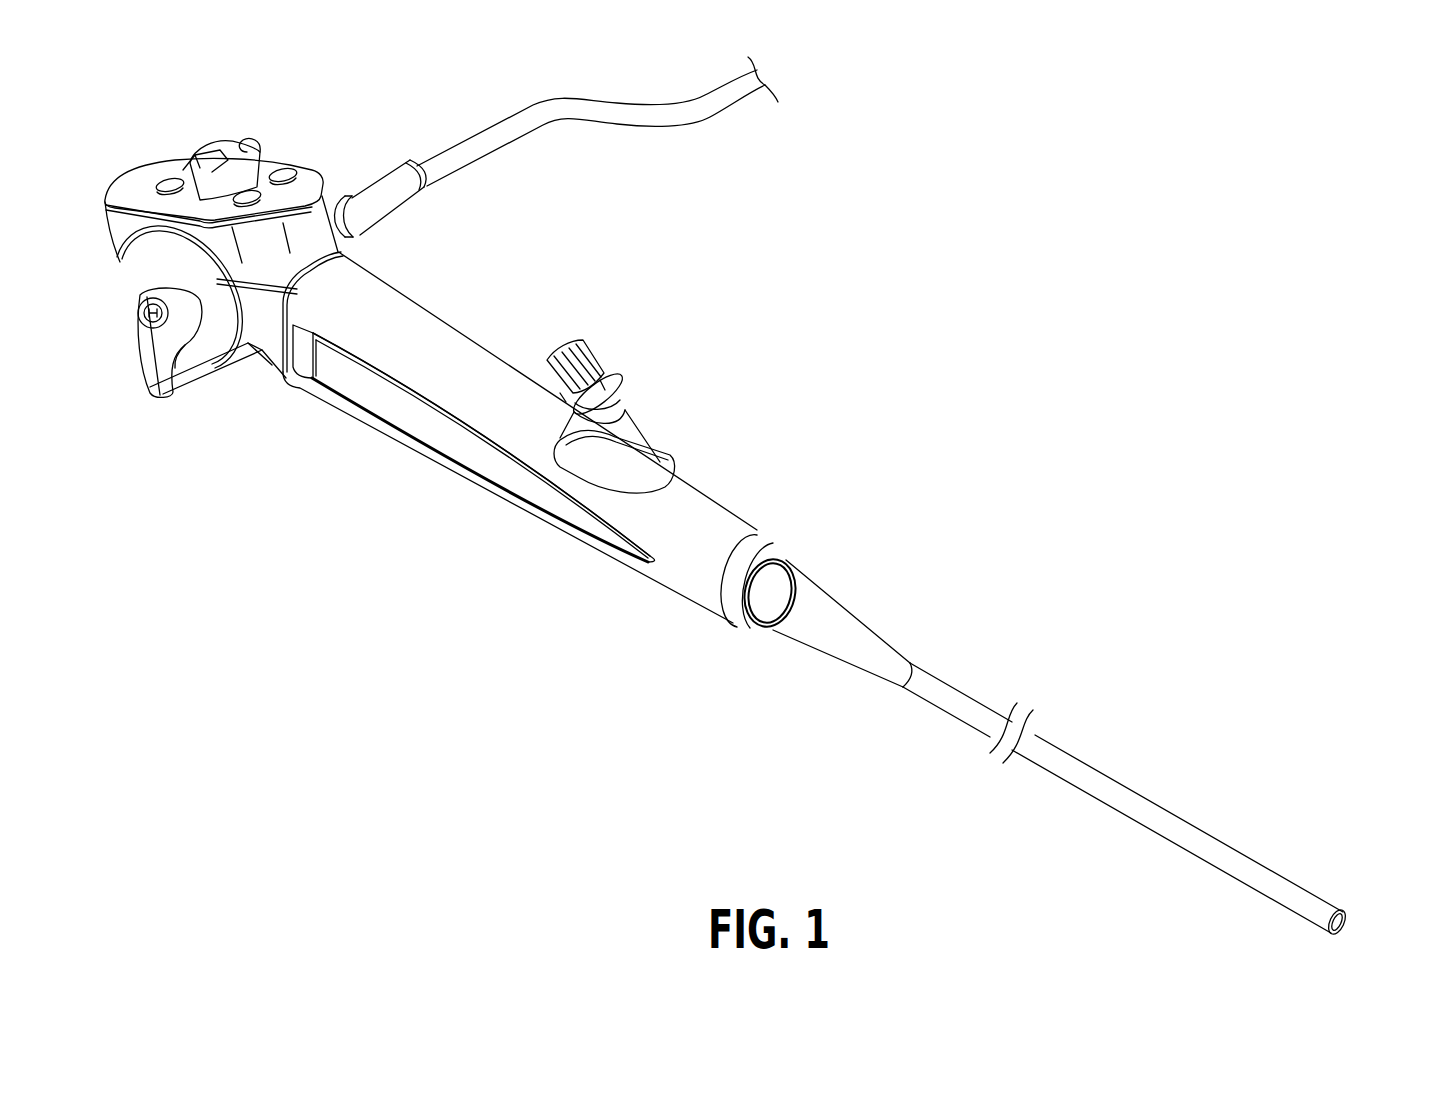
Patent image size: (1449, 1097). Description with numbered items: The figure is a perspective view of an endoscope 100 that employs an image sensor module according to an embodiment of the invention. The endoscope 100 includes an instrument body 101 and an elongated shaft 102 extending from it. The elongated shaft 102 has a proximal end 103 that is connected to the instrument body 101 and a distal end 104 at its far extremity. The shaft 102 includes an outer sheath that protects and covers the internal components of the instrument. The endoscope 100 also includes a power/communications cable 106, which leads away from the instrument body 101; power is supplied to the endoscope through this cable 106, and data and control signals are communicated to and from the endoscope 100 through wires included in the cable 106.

The endoscope 100 is at (768, 494).
The instrument body 101 is at (670, 583).
The elongated shaft 102 is at (1117, 789).
The proximal end 103 is at (946, 651).
The distal end 104 is at (1343, 889).
The power/communications cable 106 is at (540, 113).